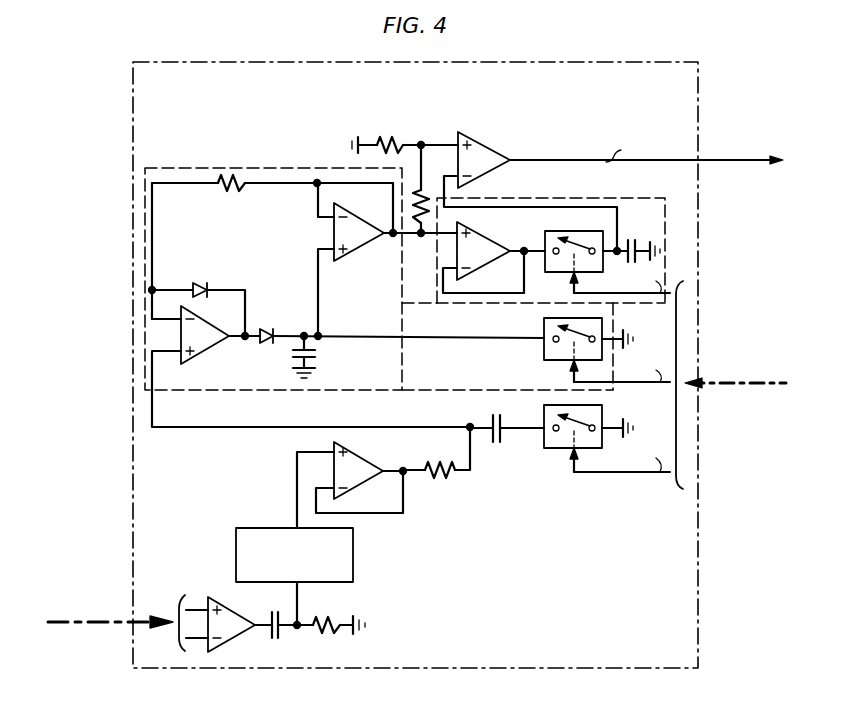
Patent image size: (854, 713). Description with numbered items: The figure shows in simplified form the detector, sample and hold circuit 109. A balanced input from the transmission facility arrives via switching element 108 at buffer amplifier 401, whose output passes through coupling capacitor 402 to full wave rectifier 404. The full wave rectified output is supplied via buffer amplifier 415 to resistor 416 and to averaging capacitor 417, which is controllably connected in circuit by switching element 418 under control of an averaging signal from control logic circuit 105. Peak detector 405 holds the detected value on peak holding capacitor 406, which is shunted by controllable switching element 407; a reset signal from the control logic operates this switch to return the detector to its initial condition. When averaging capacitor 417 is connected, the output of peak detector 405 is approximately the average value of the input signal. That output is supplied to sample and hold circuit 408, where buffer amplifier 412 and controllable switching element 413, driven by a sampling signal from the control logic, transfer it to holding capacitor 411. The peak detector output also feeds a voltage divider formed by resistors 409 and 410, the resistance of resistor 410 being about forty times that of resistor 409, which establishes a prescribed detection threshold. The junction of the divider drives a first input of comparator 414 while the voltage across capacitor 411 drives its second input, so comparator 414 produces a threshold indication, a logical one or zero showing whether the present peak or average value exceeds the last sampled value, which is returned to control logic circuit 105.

The detector, sample and hold circuit 109 is at (241, 62).
The control logic circuit 105 is at (741, 158).
The switching element 108 is at (80, 618).
The buffer amplifier 401 is at (233, 597).
The coupling capacitor 402 is at (275, 641).
The full wave rectifier 404 is at (353, 545).
The peak detector 405 is at (207, 167).
The peak holding capacitor 406 is at (316, 354).
The controllable switching element 407 is at (542, 350).
The sample and hold circuit 408 is at (594, 198).
The resistor 409 is at (421, 188).
The resistor 410 is at (392, 138).
The holding capacitor 411 is at (639, 218).
The buffer amplifier 412 is at (478, 222).
The controllable switching element 413 is at (579, 231).
The comparator 414 is at (480, 140).
The buffer amplifier 415 is at (356, 453).
The resistor 416 is at (438, 477).
The averaging (AVG) circuit capacitor 417 is at (494, 445).
The switching element 418 is at (604, 412).